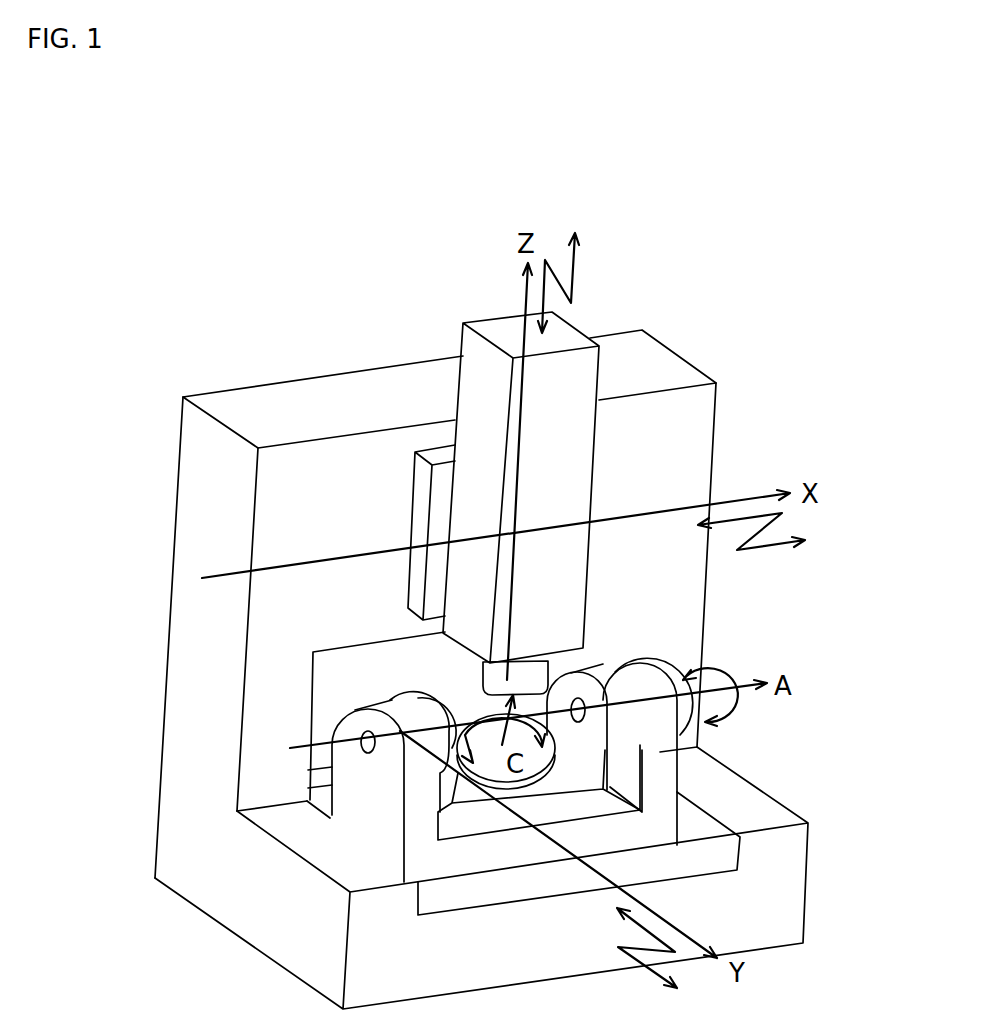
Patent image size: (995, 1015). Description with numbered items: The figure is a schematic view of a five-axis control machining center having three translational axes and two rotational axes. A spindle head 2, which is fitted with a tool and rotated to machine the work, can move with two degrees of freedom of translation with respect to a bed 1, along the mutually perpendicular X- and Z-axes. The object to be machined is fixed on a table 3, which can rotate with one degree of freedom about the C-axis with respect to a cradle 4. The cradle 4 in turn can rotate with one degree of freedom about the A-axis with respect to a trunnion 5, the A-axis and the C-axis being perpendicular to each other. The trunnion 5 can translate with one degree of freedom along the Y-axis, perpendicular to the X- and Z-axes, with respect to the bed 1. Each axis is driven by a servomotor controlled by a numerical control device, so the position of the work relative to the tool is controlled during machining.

The bed 1 is at (253, 928).
The spindle head 2 is at (482, 683).
The table 3 is at (533, 763).
The cradle 4 is at (583, 777).
The trunnion 5 is at (355, 778).